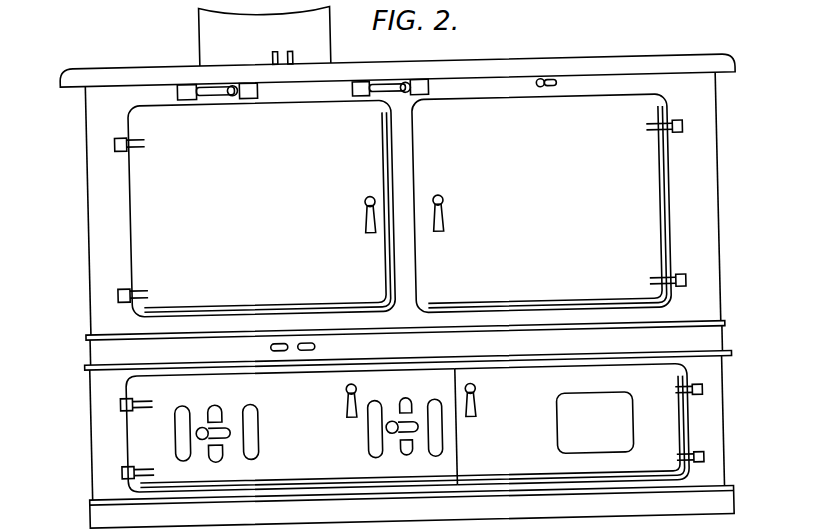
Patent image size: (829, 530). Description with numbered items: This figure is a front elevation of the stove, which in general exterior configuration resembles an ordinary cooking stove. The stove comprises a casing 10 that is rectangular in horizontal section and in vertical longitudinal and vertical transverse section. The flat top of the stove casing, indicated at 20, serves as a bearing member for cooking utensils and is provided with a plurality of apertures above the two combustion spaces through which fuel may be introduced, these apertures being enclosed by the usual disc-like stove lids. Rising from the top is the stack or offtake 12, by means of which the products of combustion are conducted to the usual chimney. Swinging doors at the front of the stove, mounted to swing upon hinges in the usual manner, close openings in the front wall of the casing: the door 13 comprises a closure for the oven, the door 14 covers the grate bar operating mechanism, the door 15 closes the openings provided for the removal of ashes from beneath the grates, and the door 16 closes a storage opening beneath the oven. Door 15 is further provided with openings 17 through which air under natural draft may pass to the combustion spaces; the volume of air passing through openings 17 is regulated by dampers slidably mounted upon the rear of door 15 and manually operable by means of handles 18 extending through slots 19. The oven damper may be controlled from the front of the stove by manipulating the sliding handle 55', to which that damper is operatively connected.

The casing 10 is at (88, 173).
The stack 12 is at (202, 33).
The door 13 is at (655, 176).
The door 14 is at (147, 214).
The door 15 is at (295, 383).
The door 16 is at (540, 383).
The openings 17 is at (240, 398).
The handles 18 is at (202, 436).
The slots 19 is at (229, 428).
The top of the stove casing 20 is at (690, 62).
The sliding handle 55' is at (555, 101).